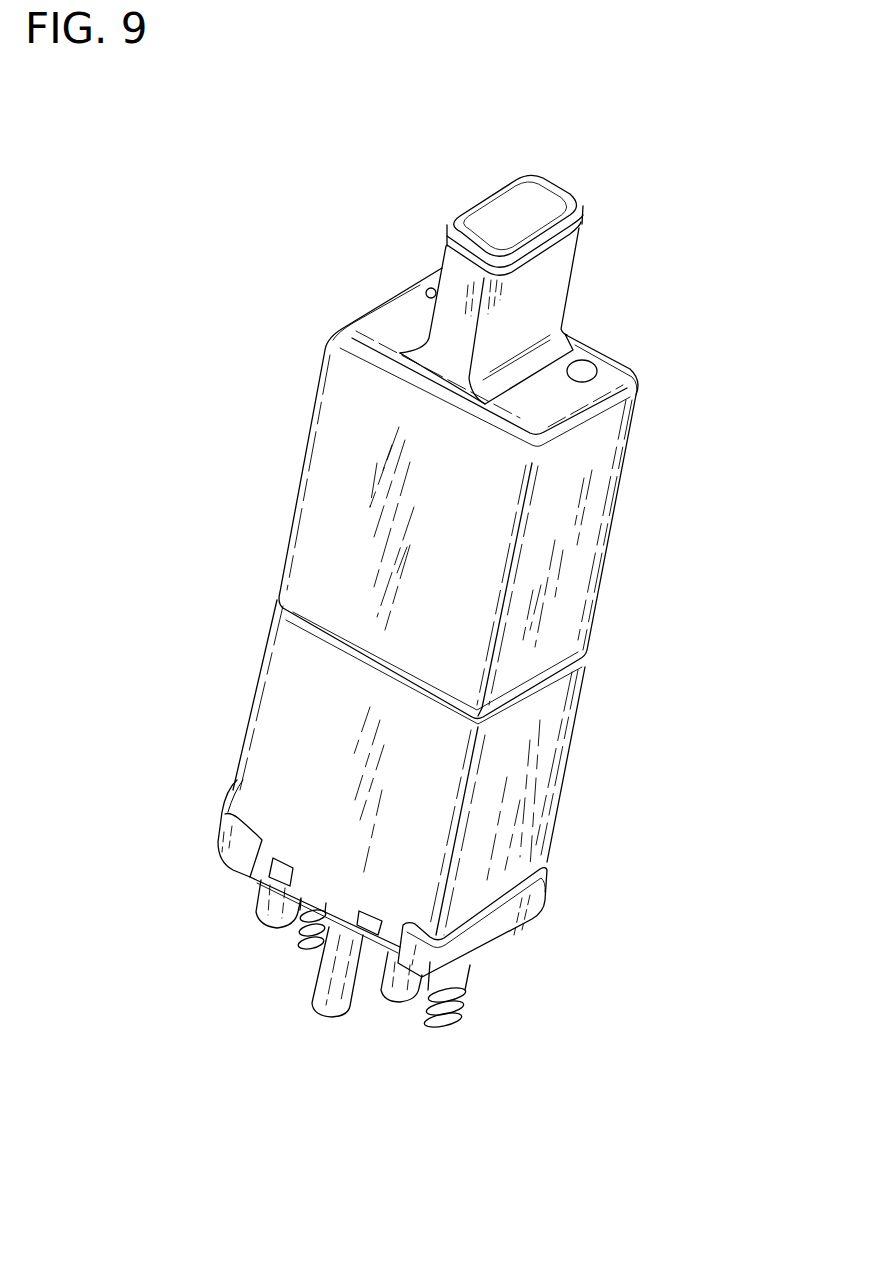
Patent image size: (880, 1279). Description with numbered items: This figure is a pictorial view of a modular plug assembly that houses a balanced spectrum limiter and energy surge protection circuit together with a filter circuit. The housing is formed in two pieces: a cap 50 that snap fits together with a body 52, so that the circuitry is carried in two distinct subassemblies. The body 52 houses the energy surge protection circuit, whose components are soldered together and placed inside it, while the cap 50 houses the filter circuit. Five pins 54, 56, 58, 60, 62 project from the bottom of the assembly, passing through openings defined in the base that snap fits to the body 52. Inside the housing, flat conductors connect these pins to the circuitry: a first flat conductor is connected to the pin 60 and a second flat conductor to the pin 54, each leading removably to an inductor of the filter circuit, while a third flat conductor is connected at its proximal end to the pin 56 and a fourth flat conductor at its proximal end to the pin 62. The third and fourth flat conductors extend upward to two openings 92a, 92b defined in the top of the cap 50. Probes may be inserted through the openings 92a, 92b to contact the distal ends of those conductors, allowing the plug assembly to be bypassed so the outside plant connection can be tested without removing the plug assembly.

The cap 50 is at (622, 494).
The body 52 is at (570, 752).
The pin 54 is at (262, 927).
The pin 56 is at (303, 947).
The pin 58 is at (312, 1010).
The pin 60 is at (393, 1000).
The pin 62 is at (440, 1023).
The opening 92a is at (585, 368).
The opening 92b is at (435, 276).